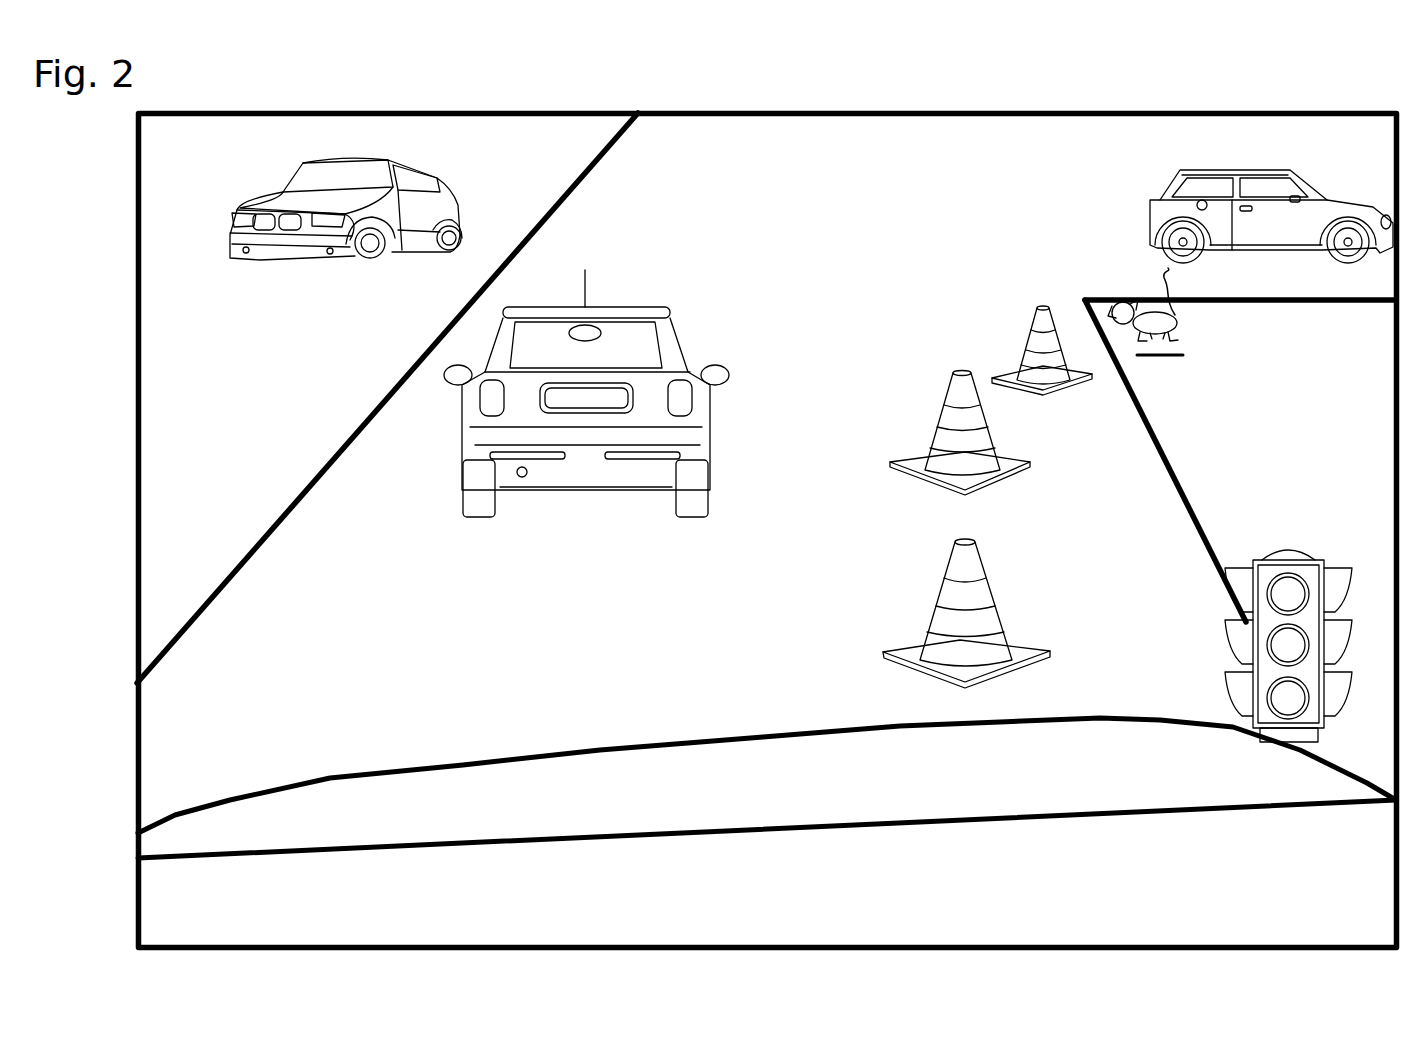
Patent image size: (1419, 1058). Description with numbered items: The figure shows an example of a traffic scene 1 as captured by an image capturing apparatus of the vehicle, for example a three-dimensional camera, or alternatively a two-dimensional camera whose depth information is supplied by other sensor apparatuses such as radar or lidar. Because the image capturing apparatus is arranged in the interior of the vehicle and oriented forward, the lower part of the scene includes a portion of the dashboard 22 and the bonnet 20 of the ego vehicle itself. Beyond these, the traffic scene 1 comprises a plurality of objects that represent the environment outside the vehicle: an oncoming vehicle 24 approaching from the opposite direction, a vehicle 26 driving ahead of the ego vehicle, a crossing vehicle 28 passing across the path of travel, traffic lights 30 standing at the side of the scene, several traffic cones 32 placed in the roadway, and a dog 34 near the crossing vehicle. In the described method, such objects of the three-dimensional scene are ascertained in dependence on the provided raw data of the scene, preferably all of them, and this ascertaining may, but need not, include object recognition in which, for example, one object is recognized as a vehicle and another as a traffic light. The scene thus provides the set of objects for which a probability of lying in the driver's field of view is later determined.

The traffic scene 1 is at (1238, 97).
The bonnet 20 is at (727, 848).
The dashboard 22 is at (470, 785).
The oncoming vehicle 24 is at (278, 207).
The vehicle driving ahead 26 is at (668, 320).
The crossing vehicle 28 is at (1157, 207).
The traffic lights 30 is at (1297, 545).
The traffic cones 32 is at (940, 597).
The dog 34 is at (1120, 298).